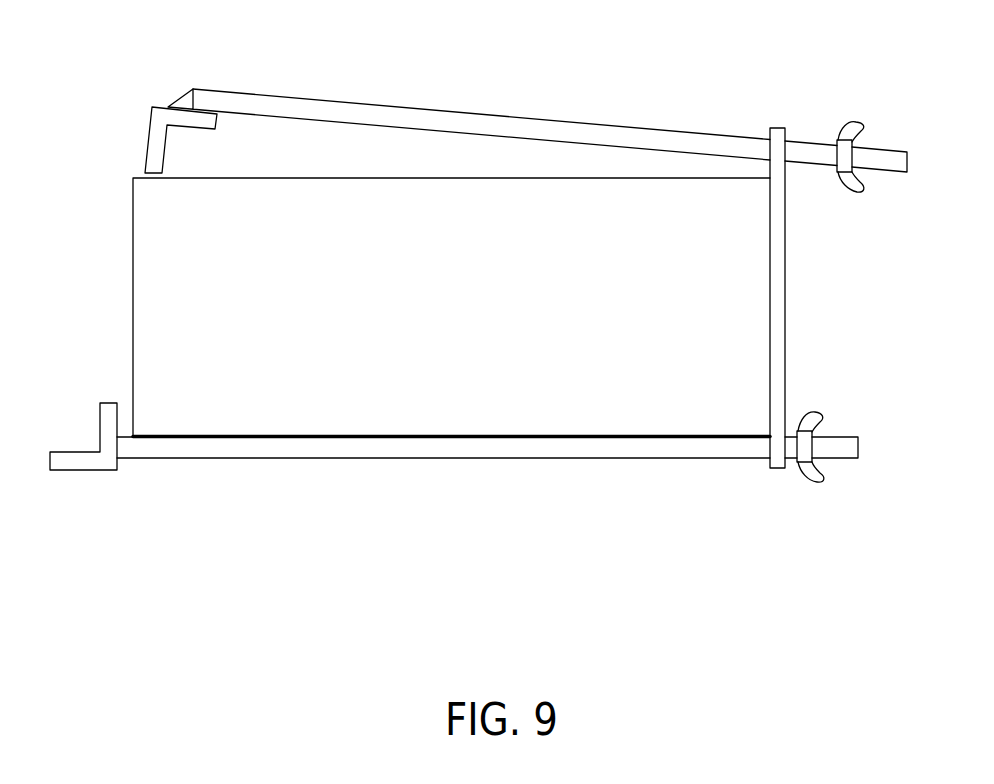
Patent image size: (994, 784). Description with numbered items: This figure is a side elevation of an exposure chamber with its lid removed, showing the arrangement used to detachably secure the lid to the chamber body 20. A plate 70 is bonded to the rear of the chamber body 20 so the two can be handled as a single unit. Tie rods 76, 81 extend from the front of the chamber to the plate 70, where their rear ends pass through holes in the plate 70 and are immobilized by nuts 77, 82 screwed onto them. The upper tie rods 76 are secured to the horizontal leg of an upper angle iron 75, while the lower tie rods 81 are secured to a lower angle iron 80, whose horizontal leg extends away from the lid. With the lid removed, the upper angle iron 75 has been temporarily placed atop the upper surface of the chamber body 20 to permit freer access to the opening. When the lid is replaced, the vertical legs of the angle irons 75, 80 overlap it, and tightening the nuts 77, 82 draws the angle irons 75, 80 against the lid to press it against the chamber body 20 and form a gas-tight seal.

The chamber body 20 is at (133, 282).
The plate 70 is at (787, 295).
The upper angle iron 75 is at (147, 140).
The tie rod 76 is at (409, 105).
The nut 77 is at (848, 122).
The lower angle iron 80 is at (83, 470).
The tie rod 81 is at (353, 458).
The nut 82 is at (805, 482).